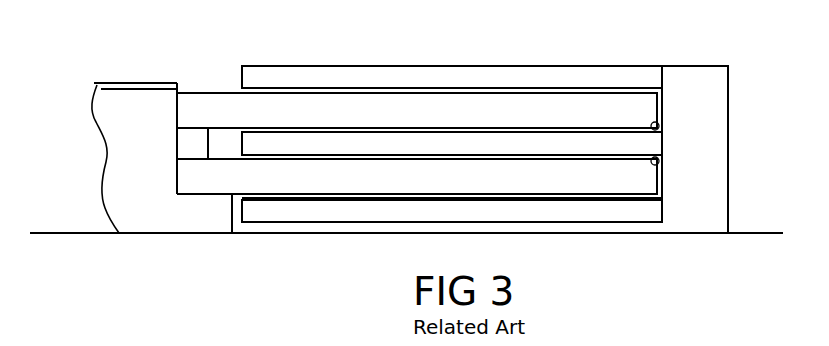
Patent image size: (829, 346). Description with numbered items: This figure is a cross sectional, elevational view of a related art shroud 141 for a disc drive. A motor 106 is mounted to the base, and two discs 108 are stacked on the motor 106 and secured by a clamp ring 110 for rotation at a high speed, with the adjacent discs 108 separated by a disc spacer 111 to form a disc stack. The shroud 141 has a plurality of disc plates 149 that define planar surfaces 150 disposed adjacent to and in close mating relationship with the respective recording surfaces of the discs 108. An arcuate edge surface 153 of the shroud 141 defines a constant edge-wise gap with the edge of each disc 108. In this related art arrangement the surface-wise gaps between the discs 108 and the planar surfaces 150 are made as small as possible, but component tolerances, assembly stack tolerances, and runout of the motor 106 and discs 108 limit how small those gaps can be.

The motor 106 is at (135, 205).
The clamp ring 110 is at (118, 82).
The disc spacer 111 is at (183, 142).
The shroud 141 is at (734, 114).
The disc 108 is at (360, 113).
The planar surface 150 is at (459, 130).
The disc plate 149 is at (520, 73).
The arcuate edge surface 153 is at (656, 130).